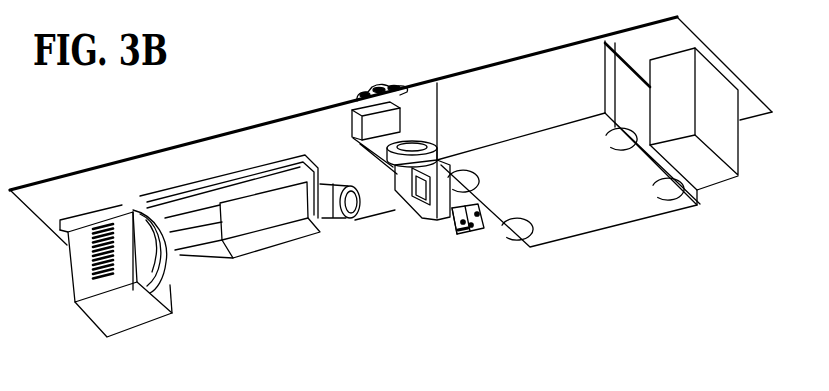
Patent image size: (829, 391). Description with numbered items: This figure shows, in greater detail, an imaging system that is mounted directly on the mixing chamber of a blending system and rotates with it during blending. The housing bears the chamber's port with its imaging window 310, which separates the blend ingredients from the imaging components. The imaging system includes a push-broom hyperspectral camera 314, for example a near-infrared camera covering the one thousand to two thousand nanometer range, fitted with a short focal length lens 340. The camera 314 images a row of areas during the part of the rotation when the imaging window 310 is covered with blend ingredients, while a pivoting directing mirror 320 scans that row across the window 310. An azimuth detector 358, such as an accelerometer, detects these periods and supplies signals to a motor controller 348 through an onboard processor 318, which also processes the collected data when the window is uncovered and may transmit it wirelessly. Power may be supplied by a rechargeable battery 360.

The imaging window 310 is at (412, 146).
The push-broom hyperspectral camera 314 is at (127, 315).
The onboard processor 318 is at (608, 207).
The pivoting directing mirror 320 is at (415, 212).
The short focal length lens 340 is at (350, 222).
The motor controller 348 is at (483, 226).
The azimuth detector 358 is at (365, 123).
The rechargeable battery 360 is at (745, 145).